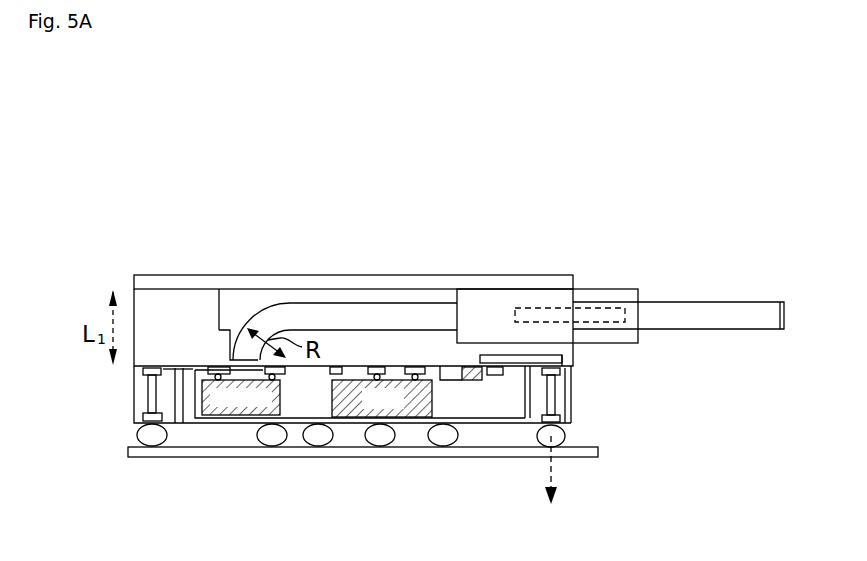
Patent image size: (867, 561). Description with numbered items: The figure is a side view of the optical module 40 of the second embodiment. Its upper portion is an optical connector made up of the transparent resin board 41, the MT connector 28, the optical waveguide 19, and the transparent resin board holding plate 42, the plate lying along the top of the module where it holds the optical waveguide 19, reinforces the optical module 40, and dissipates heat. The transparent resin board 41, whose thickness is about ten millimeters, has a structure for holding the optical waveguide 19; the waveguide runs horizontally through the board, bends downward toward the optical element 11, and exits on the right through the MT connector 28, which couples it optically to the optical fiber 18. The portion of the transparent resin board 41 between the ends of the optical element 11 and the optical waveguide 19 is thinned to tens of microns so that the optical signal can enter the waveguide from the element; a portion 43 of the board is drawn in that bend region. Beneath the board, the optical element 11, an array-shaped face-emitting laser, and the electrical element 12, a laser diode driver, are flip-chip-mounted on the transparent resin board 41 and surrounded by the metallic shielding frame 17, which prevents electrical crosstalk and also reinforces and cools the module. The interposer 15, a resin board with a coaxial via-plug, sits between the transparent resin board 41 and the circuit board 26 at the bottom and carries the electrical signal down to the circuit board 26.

The optical module 40 is at (384, 183).
The transparent resin board holding plate 42 is at (147, 275).
The transparent resin board 41 is at (158, 320).
The waveguide holding block 43 is at (233, 298).
The optical waveguide 19 is at (390, 314).
The MT connector 28 is at (487, 295).
The optical fiber 18 is at (665, 310).
The interposer 15 is at (572, 383).
The metallic shielding frame 17 is at (185, 413).
The optical element 11 is at (218, 420).
The electrical element 12 is at (418, 418).
The circuit board 26 is at (590, 457).